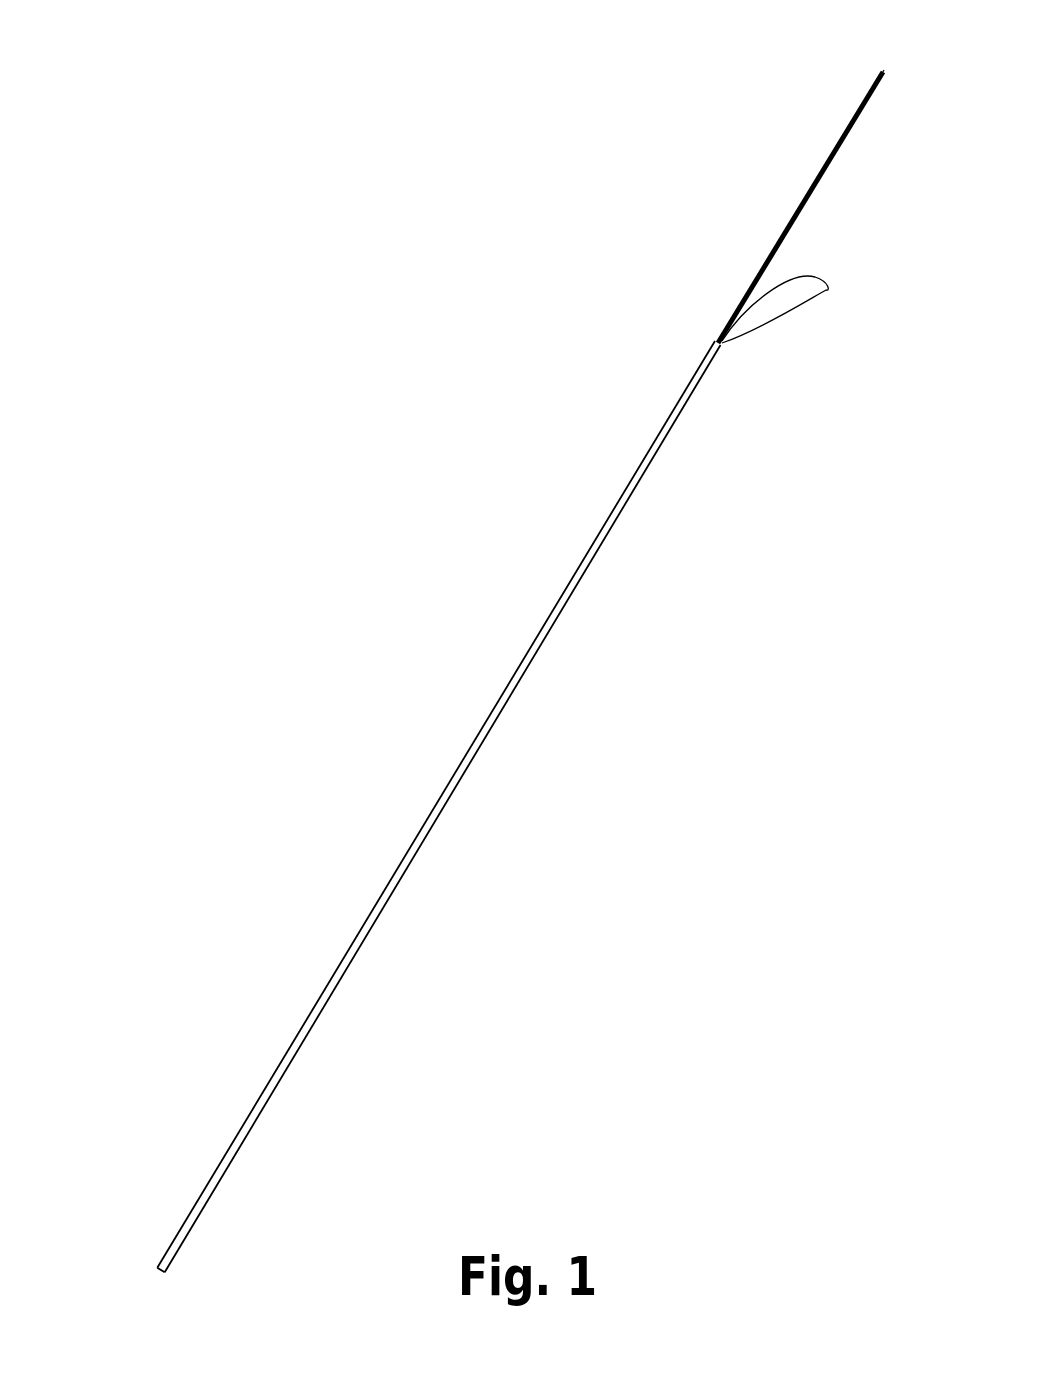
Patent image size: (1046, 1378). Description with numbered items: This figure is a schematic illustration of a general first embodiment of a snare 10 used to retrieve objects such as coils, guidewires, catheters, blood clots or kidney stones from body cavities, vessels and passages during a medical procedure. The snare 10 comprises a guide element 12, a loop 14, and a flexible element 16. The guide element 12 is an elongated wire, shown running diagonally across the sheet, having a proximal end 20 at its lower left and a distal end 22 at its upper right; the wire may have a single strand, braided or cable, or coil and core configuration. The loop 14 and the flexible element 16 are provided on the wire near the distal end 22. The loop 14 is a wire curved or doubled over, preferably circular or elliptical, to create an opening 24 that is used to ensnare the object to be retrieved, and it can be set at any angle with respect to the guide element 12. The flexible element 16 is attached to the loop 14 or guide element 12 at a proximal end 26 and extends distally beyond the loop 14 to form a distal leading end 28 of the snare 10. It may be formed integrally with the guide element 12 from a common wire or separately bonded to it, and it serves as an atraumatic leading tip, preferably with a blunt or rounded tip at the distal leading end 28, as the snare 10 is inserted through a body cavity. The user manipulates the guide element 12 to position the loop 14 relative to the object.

The snare 10 is at (290, 492).
The guide element 12 is at (437, 800).
The loop 14 is at (828, 288).
The flexible element 16 is at (810, 183).
The proximal end 20 is at (155, 1273).
The distal end 22 is at (715, 343).
The opening 24 is at (770, 318).
The proximal end 26 is at (717, 340).
The distal leading end 28 is at (884, 66).